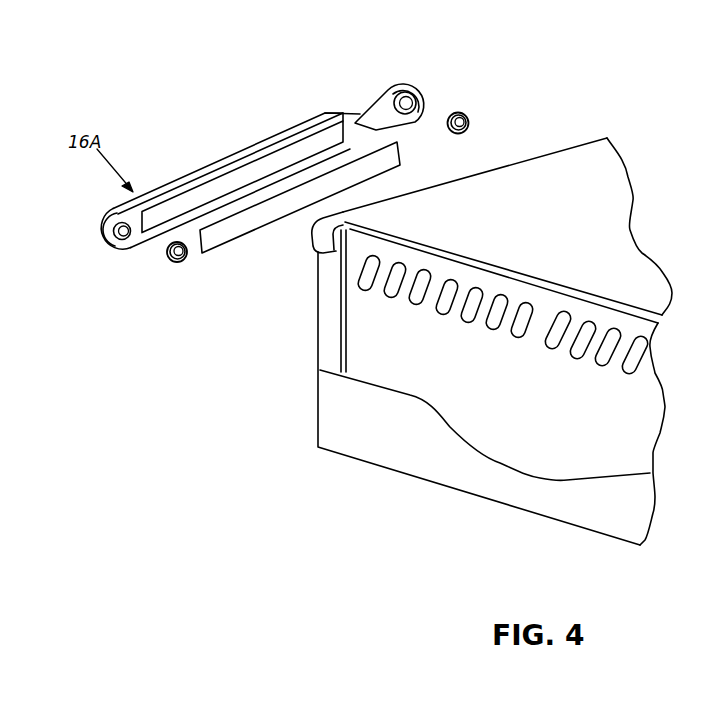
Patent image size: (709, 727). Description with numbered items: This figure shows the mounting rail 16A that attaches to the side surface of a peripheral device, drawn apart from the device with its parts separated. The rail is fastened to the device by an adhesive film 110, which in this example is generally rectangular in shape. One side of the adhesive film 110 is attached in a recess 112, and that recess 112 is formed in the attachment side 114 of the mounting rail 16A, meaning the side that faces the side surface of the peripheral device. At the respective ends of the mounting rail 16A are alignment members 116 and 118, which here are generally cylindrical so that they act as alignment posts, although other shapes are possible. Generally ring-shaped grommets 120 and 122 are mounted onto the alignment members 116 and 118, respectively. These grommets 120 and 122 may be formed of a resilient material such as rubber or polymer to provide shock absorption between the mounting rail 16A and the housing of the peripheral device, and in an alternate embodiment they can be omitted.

The mounting rail 16A is at (274, 154).
The adhesive film 110 is at (237, 211).
The recess 112 is at (330, 135).
The attachment side 114 is at (355, 123).
The alignment member 116 is at (115, 246).
The alignment member 118 is at (420, 97).
The grommet 120 is at (175, 268).
The grommet 122 is at (467, 110).